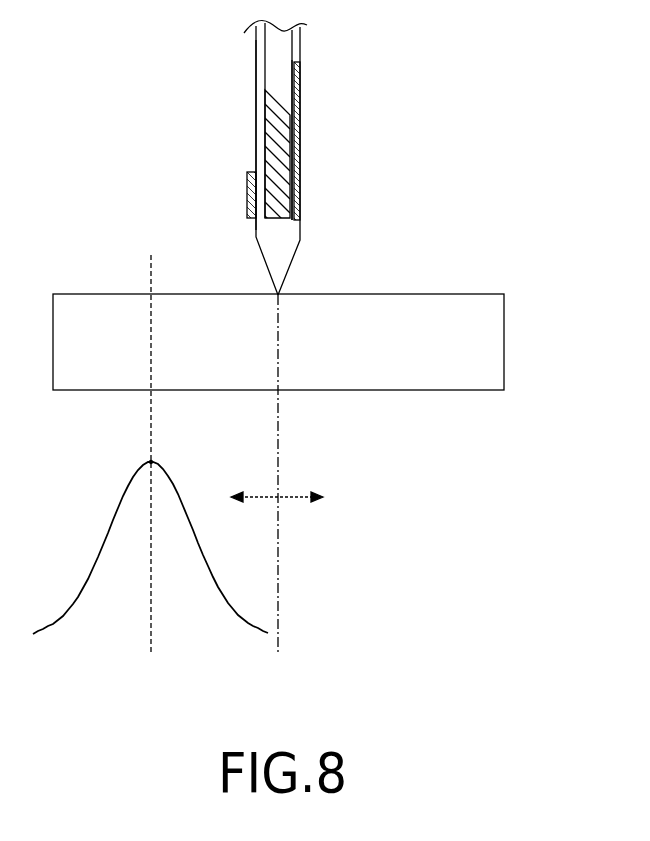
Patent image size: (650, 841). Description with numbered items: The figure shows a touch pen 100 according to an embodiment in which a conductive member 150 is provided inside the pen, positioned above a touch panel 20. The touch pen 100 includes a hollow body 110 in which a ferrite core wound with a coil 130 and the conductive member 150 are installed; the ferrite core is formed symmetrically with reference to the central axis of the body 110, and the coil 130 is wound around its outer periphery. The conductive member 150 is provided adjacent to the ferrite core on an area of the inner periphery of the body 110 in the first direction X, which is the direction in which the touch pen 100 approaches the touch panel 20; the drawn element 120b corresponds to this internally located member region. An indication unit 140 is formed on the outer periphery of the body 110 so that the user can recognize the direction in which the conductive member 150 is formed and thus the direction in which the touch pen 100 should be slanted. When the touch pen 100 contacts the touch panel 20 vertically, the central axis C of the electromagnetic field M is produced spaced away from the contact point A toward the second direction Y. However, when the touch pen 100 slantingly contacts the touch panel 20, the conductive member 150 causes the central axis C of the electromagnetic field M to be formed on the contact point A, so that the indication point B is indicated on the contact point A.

The touch pen 100 is at (211, 47).
The body 110 is at (303, 43).
The temperature sensor rod 120b is at (282, 88).
The coil 130 is at (273, 143).
The indication unit 140 is at (247, 185).
The conductive member 150 is at (298, 162).
The touch panel 20 is at (494, 343).
The contact point A is at (280, 294).
The indication point B is at (151, 294).
The central axis C is at (150, 462).
The electromagnetic field M is at (101, 553).
The first direction X is at (295, 497).
The second direction Y is at (228, 497).